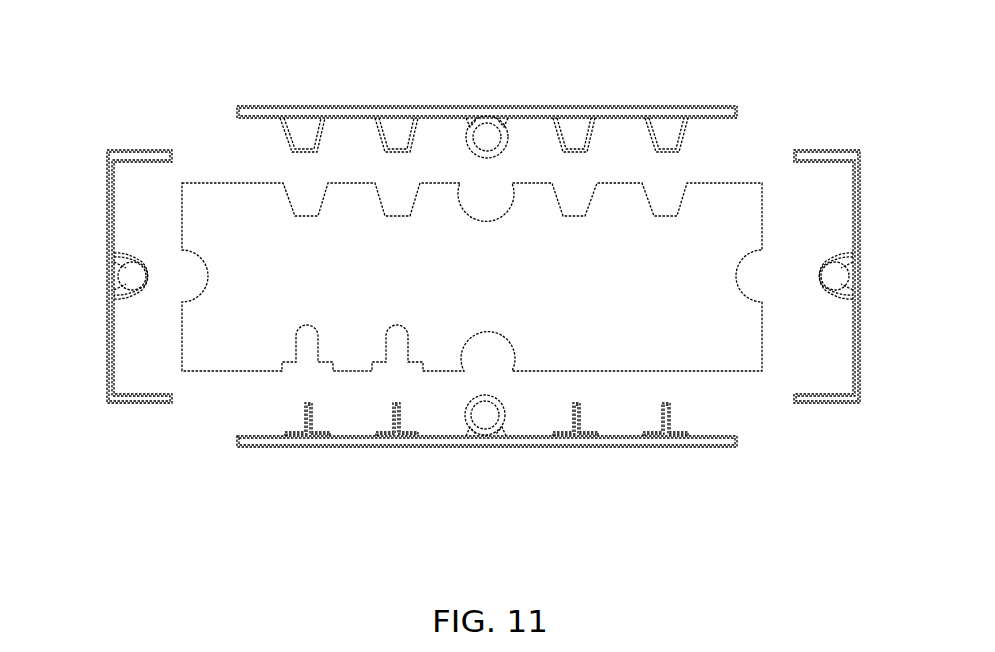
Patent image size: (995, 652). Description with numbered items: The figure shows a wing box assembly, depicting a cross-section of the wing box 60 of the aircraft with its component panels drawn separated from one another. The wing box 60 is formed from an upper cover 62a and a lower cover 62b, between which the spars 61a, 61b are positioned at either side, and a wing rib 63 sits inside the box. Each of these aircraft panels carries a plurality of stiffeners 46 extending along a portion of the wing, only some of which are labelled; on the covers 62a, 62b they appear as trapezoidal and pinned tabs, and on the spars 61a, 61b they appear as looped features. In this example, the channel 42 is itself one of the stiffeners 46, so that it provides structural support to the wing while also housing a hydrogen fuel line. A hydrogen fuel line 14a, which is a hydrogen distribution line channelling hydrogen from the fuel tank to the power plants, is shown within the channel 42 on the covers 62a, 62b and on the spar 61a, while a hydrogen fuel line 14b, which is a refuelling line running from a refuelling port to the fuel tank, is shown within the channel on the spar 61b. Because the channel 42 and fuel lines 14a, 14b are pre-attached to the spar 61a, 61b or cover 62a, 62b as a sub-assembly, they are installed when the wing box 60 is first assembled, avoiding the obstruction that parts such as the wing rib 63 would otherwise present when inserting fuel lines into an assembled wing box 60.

The wing box 60 is at (184, 455).
The cover 62a is at (720, 106).
The cover 62b is at (630, 438).
The spar 61a is at (140, 149).
The spar 61b is at (860, 192).
The wing rib 63 is at (740, 372).
The stiffener 46 is at (310, 130).
The channel 42 is at (498, 120).
The hydrogen fuel line 14a is at (472, 120).
The hydrogen fuel line 14b is at (860, 263).